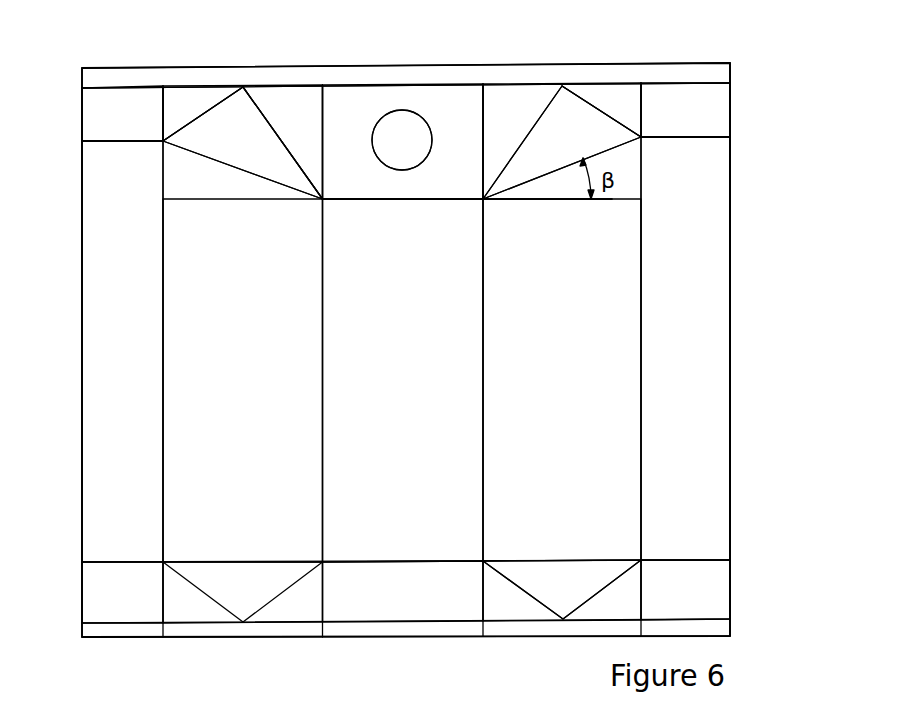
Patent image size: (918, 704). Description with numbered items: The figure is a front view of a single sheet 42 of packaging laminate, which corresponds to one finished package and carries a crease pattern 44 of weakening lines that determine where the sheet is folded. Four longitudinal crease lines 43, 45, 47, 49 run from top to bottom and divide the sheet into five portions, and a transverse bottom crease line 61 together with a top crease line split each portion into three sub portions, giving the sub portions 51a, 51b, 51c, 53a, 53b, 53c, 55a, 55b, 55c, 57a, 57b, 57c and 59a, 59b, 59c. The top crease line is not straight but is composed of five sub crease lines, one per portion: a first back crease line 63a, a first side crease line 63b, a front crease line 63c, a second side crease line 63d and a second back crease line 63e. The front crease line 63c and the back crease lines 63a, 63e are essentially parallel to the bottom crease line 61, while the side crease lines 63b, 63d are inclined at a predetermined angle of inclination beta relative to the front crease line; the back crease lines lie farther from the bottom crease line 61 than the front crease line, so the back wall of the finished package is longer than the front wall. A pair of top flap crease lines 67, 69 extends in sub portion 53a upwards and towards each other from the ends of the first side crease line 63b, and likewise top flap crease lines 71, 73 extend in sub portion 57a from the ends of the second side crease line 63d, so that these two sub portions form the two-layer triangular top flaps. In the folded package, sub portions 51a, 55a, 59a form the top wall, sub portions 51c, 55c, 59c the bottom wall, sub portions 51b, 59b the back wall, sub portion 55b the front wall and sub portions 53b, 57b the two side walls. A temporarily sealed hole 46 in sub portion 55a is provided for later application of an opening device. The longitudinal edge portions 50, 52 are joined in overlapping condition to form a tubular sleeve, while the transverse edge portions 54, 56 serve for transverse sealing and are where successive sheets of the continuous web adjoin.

The sheet 42 is at (753, 248).
The longitudinal crease line 43 is at (160, 110).
The crease pattern 44 is at (163, 142).
The longitudinal crease line 45 is at (325, 117).
The temporarily sealed hole 46 is at (393, 128).
The longitudinal crease line 47 is at (485, 118).
The longitudinal crease line 49 is at (645, 107).
The edge portion 50 is at (82, 360).
The edge portion 52 is at (730, 335).
The edge portion 54 is at (583, 63).
The edge portion 56 is at (418, 636).
The bottom crease line 61 is at (573, 560).
The first back crease line 63a is at (123, 140).
The first side crease line 63b is at (222, 158).
The front crease line 63c is at (347, 200).
The second side crease line 63d is at (623, 114).
The second back crease line 63e is at (688, 140).
The top flap crease line 67 is at (240, 87).
The top flap crease line 69 is at (260, 100).
The top flap crease line 71 is at (582, 92).
The top flap crease line 73 is at (540, 113).
The sub portion 51a is at (142, 113).
The sub portion 51b is at (142, 378).
The sub portion 51c is at (146, 621).
The sub portion 53a is at (309, 113).
The sub portion 53b is at (270, 378).
The sub portion 53c is at (314, 621).
The sub portion 55a is at (470, 113).
The sub portion 55b is at (414, 378).
The sub portion 55c is at (470, 620).
The sub portion 57a is at (632, 111).
The sub portion 57b is at (576, 378).
The sub portion 57c is at (630, 620).
The sub portion 59a is at (708, 111).
The sub portion 59b is at (706, 375).
The sub portion 59c is at (712, 620).